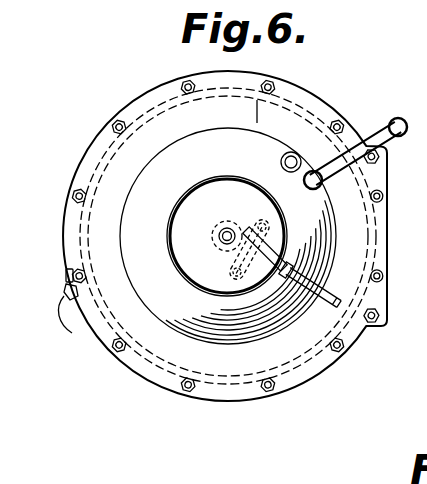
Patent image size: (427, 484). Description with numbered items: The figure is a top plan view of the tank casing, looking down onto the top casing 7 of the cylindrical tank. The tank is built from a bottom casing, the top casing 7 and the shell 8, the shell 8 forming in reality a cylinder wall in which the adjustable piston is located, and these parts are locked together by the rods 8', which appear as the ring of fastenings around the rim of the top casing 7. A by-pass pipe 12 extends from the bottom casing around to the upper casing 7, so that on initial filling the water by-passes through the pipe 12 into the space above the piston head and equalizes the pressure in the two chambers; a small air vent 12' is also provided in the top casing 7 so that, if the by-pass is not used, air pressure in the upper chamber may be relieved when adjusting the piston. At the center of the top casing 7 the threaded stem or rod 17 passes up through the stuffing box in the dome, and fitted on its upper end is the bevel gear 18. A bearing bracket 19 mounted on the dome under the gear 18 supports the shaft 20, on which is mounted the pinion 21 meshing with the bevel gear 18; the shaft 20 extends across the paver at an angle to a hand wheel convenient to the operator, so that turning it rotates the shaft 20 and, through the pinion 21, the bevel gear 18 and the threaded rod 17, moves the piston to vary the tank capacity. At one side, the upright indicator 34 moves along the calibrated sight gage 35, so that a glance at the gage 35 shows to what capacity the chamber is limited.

The top casing 7 is at (141, 106).
The shell 8 is at (216, 235).
The rods 8' is at (59, 189).
The pipe 12 is at (355, 133).
The air vent 12' is at (319, 124).
The stem or rod 17 is at (219, 238).
The bevel gear 18 is at (204, 185).
The bearing bracket 19 is at (250, 292).
The shaft 20 is at (340, 306).
The pinion 21 is at (290, 254).
The upright indicator 34 is at (84, 298).
The calibrated sight gage 35 is at (66, 278).